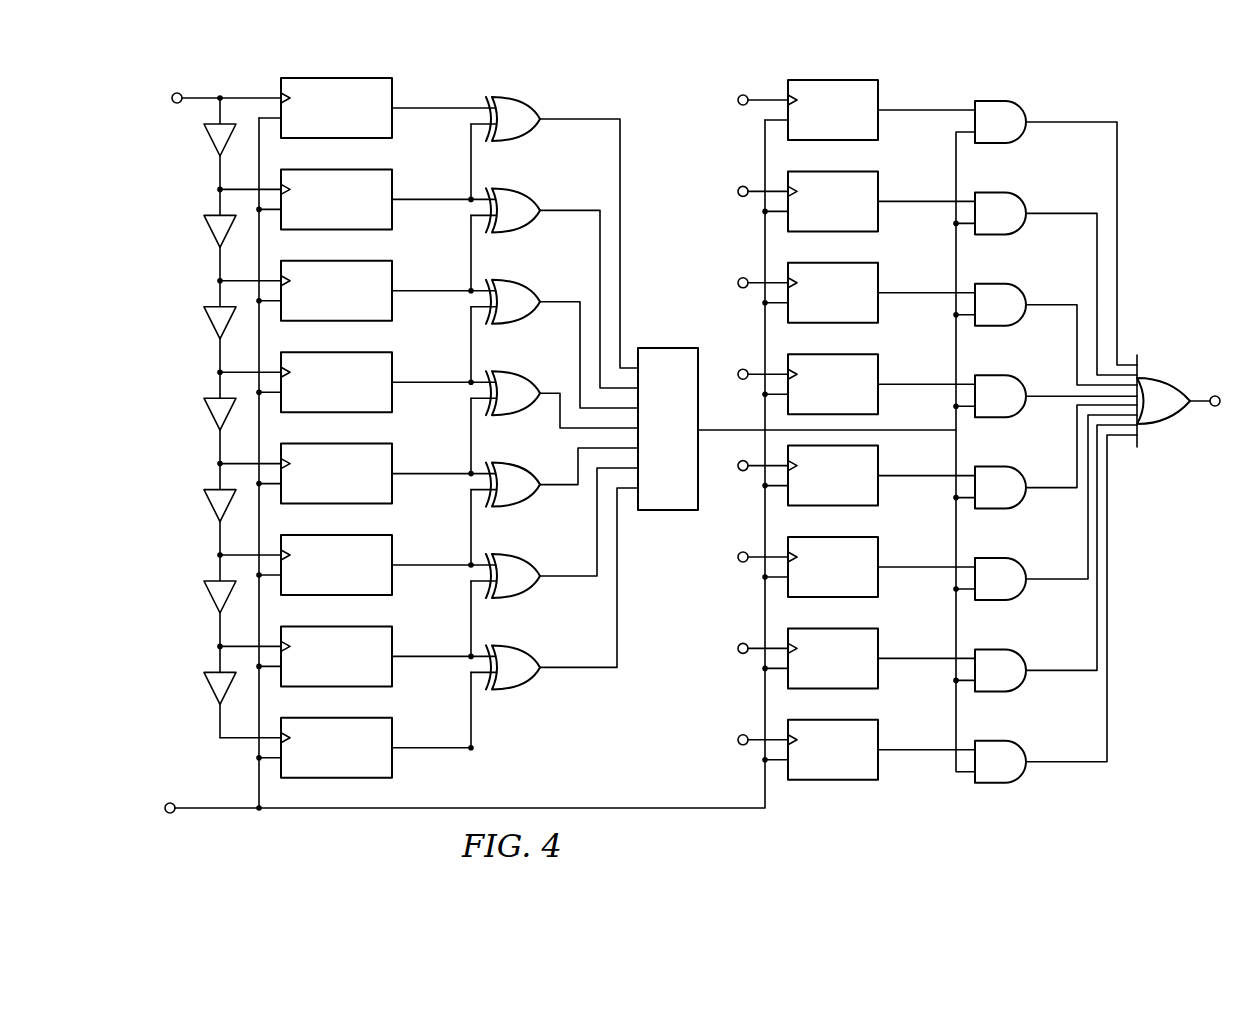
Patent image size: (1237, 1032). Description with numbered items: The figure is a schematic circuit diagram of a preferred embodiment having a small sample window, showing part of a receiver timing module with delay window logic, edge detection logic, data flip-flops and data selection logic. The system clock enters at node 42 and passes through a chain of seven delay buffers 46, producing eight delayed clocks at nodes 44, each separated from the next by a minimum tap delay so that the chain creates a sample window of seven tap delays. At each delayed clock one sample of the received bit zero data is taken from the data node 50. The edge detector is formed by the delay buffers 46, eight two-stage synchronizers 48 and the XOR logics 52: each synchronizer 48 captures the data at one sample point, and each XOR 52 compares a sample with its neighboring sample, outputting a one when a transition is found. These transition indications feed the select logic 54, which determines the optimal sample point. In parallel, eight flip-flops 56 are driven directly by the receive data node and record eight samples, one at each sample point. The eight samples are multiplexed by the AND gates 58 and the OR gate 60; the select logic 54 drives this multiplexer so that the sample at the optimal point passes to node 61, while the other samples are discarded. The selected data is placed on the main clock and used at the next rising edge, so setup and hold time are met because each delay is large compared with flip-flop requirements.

The system clock node 42 is at (177, 93).
The delayed clock nodes 44 is at (472, 427).
The delay buffers 46 is at (196, 420).
The data synchronizers 48 is at (367, 433).
The data node 50 is at (165, 810).
The XOR logics 52 is at (515, 407).
The select logic 54 is at (660, 510).
The flip-flops 56 is at (864, 436).
The multiplexer AND gates 58 is at (1007, 451).
The multiplexer OR gate 60 is at (1165, 425).
The output node 61 is at (1215, 395).